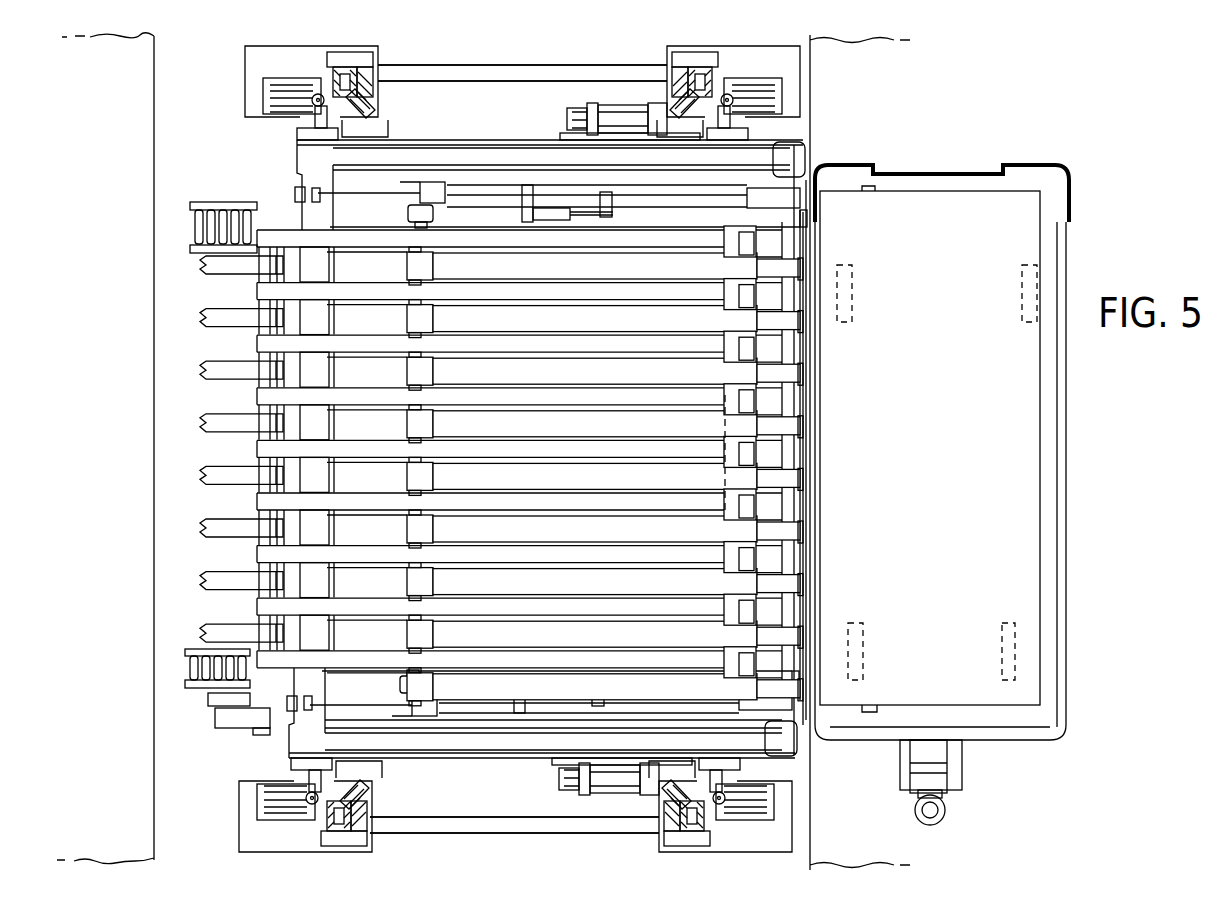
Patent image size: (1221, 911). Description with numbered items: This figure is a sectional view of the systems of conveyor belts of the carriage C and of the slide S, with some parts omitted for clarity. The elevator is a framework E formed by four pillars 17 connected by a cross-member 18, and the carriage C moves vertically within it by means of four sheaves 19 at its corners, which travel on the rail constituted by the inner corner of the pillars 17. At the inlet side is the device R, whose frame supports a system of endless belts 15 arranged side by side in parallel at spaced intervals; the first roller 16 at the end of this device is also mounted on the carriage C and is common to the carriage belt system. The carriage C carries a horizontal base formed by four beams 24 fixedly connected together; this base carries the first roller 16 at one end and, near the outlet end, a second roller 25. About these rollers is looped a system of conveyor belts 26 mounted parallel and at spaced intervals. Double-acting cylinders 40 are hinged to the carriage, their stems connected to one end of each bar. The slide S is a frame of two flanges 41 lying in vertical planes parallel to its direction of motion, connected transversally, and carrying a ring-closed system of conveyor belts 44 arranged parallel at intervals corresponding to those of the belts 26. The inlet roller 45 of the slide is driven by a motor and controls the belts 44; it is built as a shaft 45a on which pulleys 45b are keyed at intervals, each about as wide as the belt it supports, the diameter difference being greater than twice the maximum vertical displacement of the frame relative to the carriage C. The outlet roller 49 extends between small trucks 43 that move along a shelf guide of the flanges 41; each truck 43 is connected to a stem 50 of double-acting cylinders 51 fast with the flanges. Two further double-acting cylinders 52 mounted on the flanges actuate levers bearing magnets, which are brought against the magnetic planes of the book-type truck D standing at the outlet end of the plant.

The endless belts 15 is at (223, 367).
The first roller 16 is at (257, 618).
The pillars 17 is at (345, 72).
The cross-member 18 is at (547, 70).
The sheaves 19 is at (373, 92).
The beams 24 is at (473, 148).
The second roller 25 is at (727, 503).
The belts 26 is at (390, 342).
The double-acting cylinders 40 is at (617, 113).
The flanges 41 is at (485, 163).
The small truck 43 is at (795, 198).
The conveyor belts 44 is at (797, 330).
The inlet roller 45 is at (405, 617).
The shaft 45a is at (405, 515).
The pulleys 45b is at (405, 488).
The outlet roller 49 is at (797, 396).
The stems 50 is at (683, 193).
The double-acting cylinders 51 is at (378, 202).
The double-acting cylinders 52 is at (547, 207).
The carriage C is at (450, 138).
The book-type truck D is at (1068, 503).
The framework E is at (495, 66).
The device R is at (227, 204).
The slide S is at (805, 502).